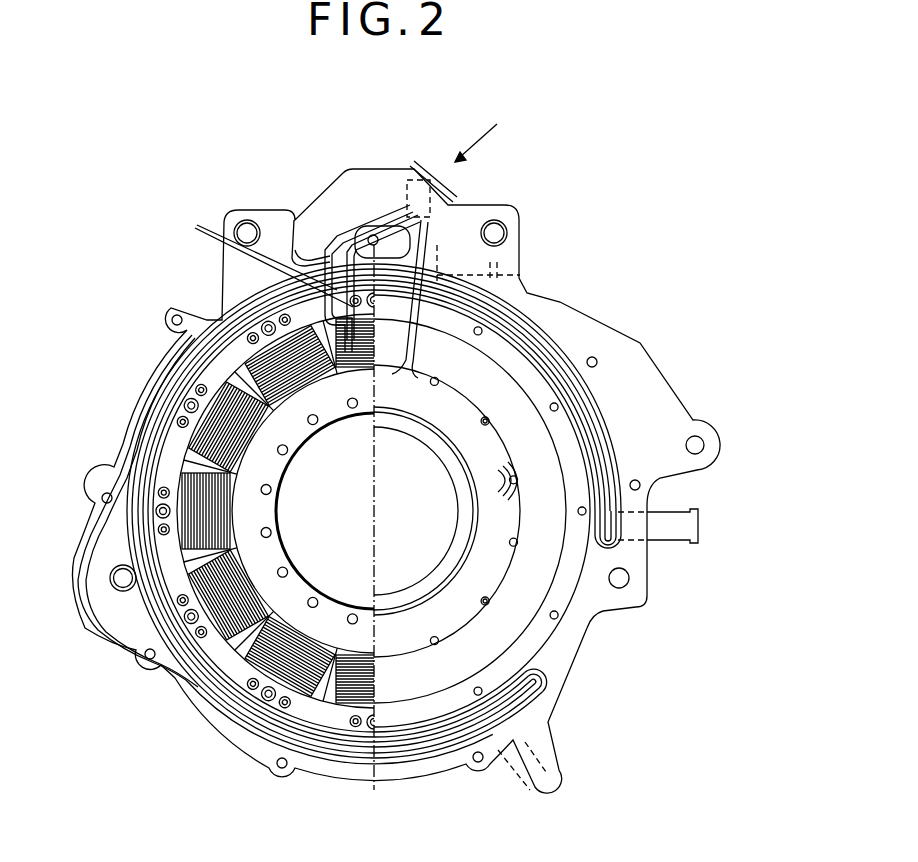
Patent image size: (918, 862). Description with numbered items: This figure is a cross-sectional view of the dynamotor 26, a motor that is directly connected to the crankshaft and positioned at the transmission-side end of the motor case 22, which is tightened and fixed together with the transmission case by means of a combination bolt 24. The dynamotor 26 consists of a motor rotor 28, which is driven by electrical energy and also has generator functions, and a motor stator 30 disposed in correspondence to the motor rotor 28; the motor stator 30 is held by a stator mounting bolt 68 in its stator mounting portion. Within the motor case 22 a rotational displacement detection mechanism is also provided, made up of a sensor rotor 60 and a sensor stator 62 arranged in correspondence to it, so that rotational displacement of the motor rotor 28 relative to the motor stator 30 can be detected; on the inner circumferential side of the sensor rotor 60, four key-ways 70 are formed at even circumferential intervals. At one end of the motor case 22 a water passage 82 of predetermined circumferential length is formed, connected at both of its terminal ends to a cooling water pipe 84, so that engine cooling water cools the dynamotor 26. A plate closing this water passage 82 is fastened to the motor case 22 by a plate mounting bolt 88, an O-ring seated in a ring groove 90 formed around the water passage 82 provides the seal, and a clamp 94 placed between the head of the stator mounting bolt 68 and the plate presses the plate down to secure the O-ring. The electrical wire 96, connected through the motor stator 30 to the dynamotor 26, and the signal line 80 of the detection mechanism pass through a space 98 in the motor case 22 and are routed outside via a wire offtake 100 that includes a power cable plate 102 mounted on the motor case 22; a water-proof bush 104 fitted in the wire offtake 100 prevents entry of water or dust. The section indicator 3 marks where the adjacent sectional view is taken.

The section line 3 is at (484, 133).
The motor case 22 is at (263, 203).
The combination bolt 24 is at (244, 222).
The dynamotor 26 is at (560, 172).
The motor rotor 28 is at (170, 458).
The motor stator 30 is at (175, 437).
The sensor rotor 60 is at (553, 655).
The sensor stator 62 is at (556, 552).
The stator mounting bolt 68 is at (172, 400).
The key-way 70 is at (557, 645).
The signal line 80 is at (483, 325).
The water passage 82 is at (253, 716).
The cooling water pipe 84 is at (673, 513).
The plate mounting bolt 88 is at (177, 315).
The ring groove 90 is at (334, 765).
The clamp 94 is at (338, 180).
The electrical wire 96 is at (260, 254).
The space 98 is at (375, 198).
The wire offtake 100 is at (418, 175).
The power cable plate 102 is at (438, 168).
The water-proof bush 104 is at (455, 206).